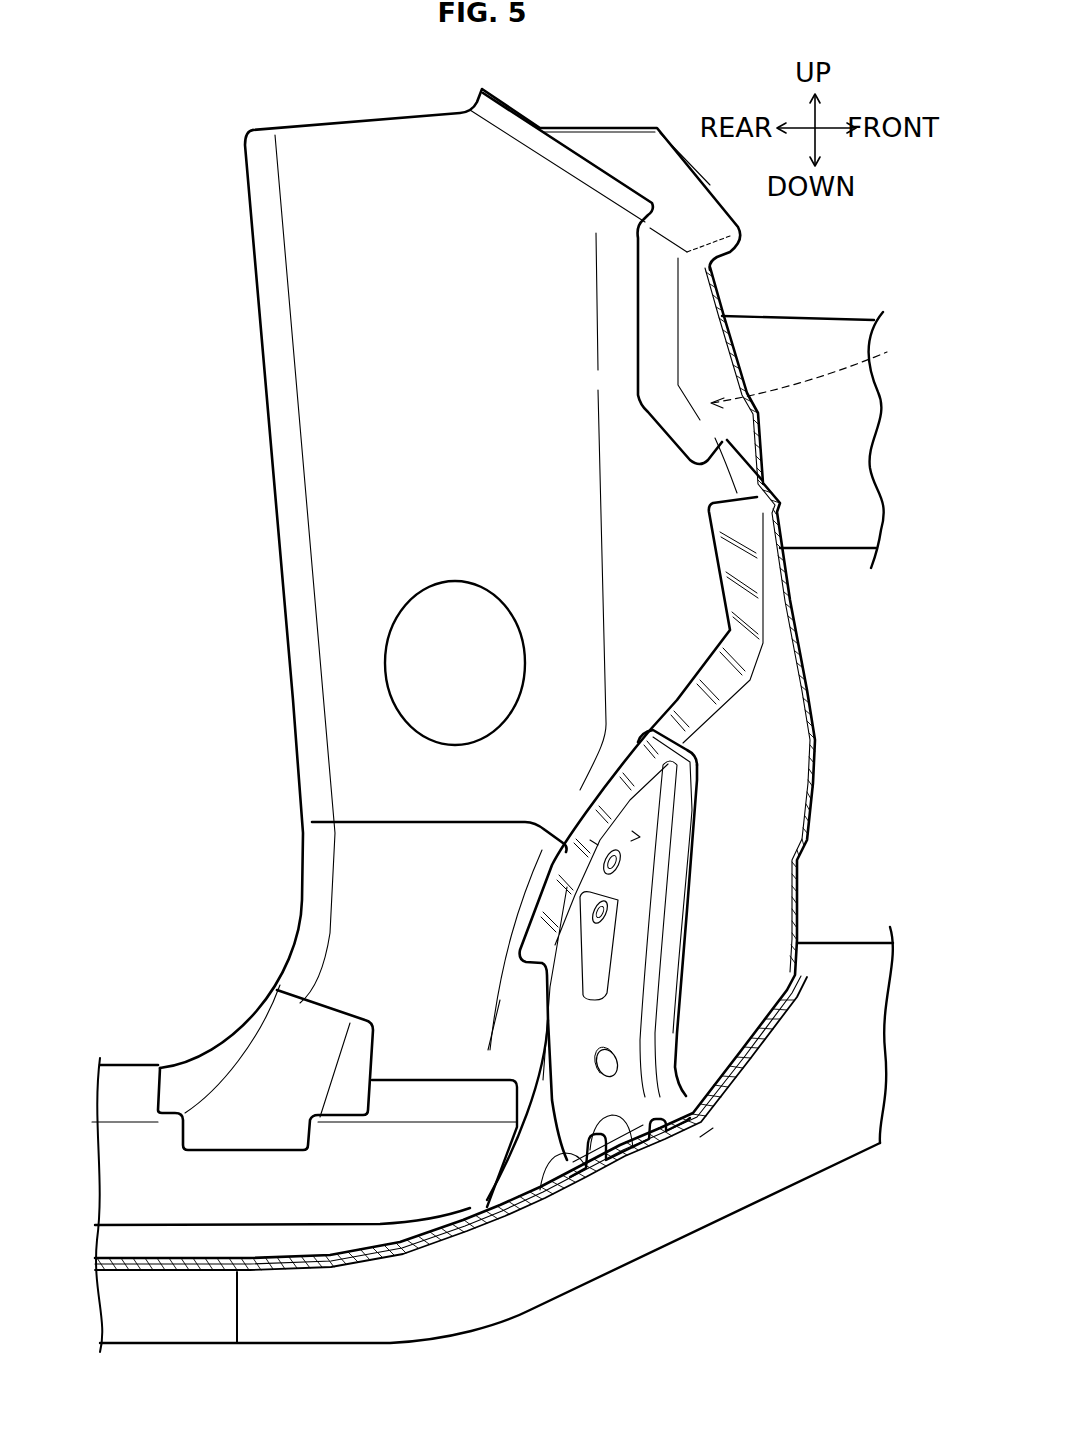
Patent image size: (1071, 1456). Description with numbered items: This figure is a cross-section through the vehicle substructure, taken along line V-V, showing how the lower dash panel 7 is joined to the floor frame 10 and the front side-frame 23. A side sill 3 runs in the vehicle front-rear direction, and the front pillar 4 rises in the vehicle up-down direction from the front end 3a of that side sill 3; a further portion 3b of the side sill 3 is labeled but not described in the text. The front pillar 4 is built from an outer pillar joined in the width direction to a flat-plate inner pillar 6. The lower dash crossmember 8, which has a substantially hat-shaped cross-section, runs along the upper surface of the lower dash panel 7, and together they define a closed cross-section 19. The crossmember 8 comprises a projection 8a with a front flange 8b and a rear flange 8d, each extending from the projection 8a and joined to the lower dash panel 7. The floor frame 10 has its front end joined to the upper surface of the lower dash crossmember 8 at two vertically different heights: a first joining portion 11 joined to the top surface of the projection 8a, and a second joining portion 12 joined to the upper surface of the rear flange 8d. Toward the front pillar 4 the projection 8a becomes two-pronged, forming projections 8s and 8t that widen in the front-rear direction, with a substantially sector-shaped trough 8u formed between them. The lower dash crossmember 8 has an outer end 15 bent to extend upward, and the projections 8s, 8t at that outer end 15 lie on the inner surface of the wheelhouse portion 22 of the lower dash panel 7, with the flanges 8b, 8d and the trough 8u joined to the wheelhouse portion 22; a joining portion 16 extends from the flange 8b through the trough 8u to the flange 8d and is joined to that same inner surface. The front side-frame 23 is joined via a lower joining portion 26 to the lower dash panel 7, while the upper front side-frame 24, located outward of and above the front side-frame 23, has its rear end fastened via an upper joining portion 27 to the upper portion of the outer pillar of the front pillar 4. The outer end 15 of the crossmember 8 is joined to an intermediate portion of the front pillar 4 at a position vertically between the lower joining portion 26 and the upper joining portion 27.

The side sill 3 is at (120, 1182).
The front end of the side sill 3a is at (427, 1180).
The side sill bracket 3b is at (240, 1050).
The front pillar 4 is at (240, 310).
The inner pillar 6 is at (357, 425).
The lower dash panel 7 is at (822, 694).
The lower dash crossmember 8 is at (708, 830).
The projection 8a is at (593, 1023).
The front flange 8b is at (680, 873).
The rear flange 8d is at (590, 1180).
The projection 8s is at (565, 952).
The projection 8t is at (637, 890).
The trough 8u is at (603, 982).
The floor frame 10 is at (120, 1241).
The first joining portion 11 is at (633, 1157).
The second joining portion 12 is at (547, 1160).
The outer end 15 is at (640, 837).
The joining portion 16 is at (590, 840).
The closed cross-section 19 is at (647, 1133).
The wheelhouse portion 22 is at (790, 730).
The front side-frame 23 is at (843, 960).
The upper front side-frame 24 is at (795, 330).
The lower joining portion 26 is at (698, 1138).
The upper joining portion 27 is at (880, 352).